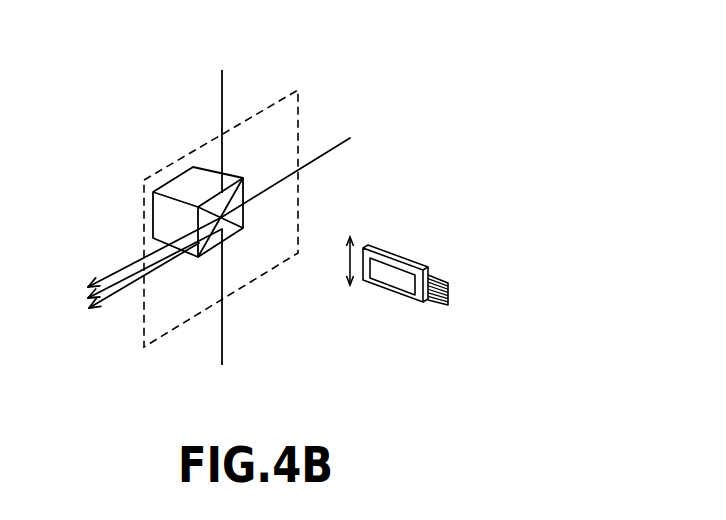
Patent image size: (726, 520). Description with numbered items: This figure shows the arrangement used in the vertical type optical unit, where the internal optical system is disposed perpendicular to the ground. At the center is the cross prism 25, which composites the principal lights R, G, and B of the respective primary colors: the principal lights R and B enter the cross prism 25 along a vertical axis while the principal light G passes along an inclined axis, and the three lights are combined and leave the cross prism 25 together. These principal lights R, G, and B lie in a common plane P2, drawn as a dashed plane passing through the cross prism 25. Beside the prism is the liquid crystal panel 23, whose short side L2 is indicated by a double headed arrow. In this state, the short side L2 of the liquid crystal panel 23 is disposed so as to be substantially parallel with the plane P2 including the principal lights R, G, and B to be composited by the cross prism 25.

The cross prism 25 is at (168, 180).
The liquid crystal panel 23 is at (392, 253).
The principal light of red primary color R is at (222, 118).
The principal light of green primary color G is at (229, 206).
The principal light of blue primary color B is at (222, 312).
The plane including principal lights P2 is at (282, 122).
The short side of liquid crystal panel L2 is at (358, 246).